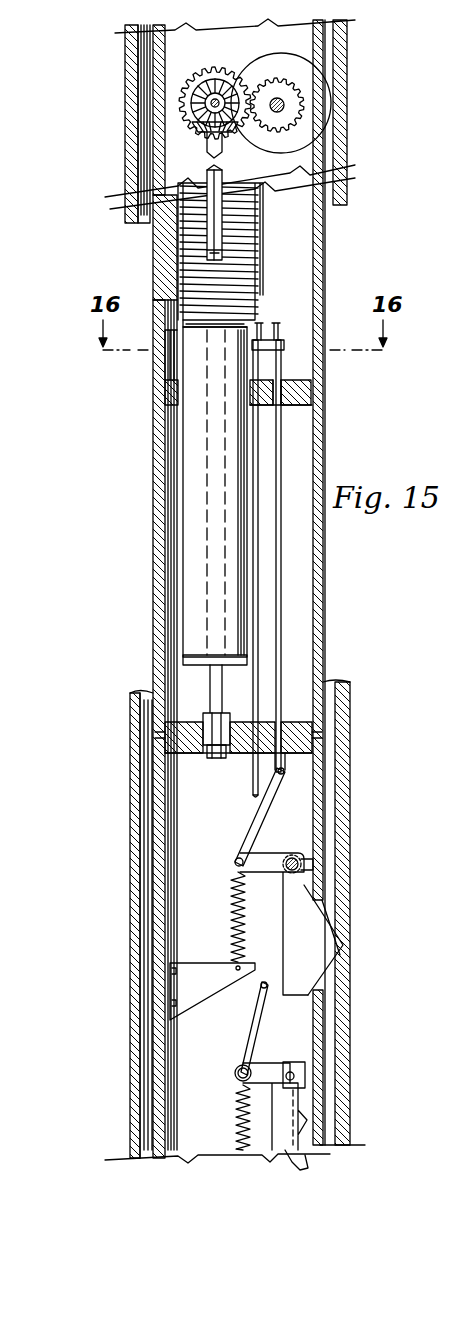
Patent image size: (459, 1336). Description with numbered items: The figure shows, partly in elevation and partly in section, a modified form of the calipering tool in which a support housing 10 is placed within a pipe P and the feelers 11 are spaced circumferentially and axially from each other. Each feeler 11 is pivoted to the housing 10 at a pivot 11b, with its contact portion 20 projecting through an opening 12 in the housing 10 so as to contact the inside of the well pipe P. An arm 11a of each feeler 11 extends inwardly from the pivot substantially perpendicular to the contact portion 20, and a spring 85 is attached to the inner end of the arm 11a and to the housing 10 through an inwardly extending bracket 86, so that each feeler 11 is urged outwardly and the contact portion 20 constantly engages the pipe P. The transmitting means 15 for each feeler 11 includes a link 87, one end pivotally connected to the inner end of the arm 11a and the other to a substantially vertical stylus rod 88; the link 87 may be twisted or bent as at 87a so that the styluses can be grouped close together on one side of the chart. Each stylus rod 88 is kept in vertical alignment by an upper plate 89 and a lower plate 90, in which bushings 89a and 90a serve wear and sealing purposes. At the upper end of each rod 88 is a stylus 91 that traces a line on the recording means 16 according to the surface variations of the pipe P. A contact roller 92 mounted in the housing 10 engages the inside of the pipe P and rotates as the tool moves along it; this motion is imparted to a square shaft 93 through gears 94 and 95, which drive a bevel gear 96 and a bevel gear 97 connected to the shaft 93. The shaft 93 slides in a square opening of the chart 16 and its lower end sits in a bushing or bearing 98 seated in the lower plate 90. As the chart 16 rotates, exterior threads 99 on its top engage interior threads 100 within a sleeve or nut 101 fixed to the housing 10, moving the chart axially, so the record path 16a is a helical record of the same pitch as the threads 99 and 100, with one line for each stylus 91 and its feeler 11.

The support housing 10 is at (330, 782).
The pipe P is at (340, 36).
The feeler 11 is at (300, 1012).
The arm 11a is at (296, 828).
The pivot 11b is at (300, 868).
The opening 12 is at (325, 912).
The transmitting means 15 is at (290, 606).
The recording means 16 is at (186, 437).
The record path 16a is at (240, 348).
The contact portion 20 is at (350, 970).
The spring 85 is at (228, 905).
The bracket 86 is at (205, 997).
The link 87 is at (262, 826).
The twist or bend 87a is at (246, 1028).
The stylus rod 88 is at (283, 572).
The plate 89 is at (320, 390).
The bushing 89a is at (288, 408).
The plate 90 is at (315, 722).
The bushing 90a is at (300, 725).
The stylus 91 is at (270, 323).
The contact roller 92 is at (320, 87).
The square shaft 93 is at (178, 232).
The gear 94 is at (295, 107).
The gear 95 is at (222, 68).
The bevel gear 96 is at (192, 100).
The bevel gear 97 is at (196, 127).
The bushing or bearing 98 is at (205, 718).
The exterior threads 99 is at (258, 302).
The interior threads 100 is at (262, 236).
The sleeve or nut 101 is at (262, 256).